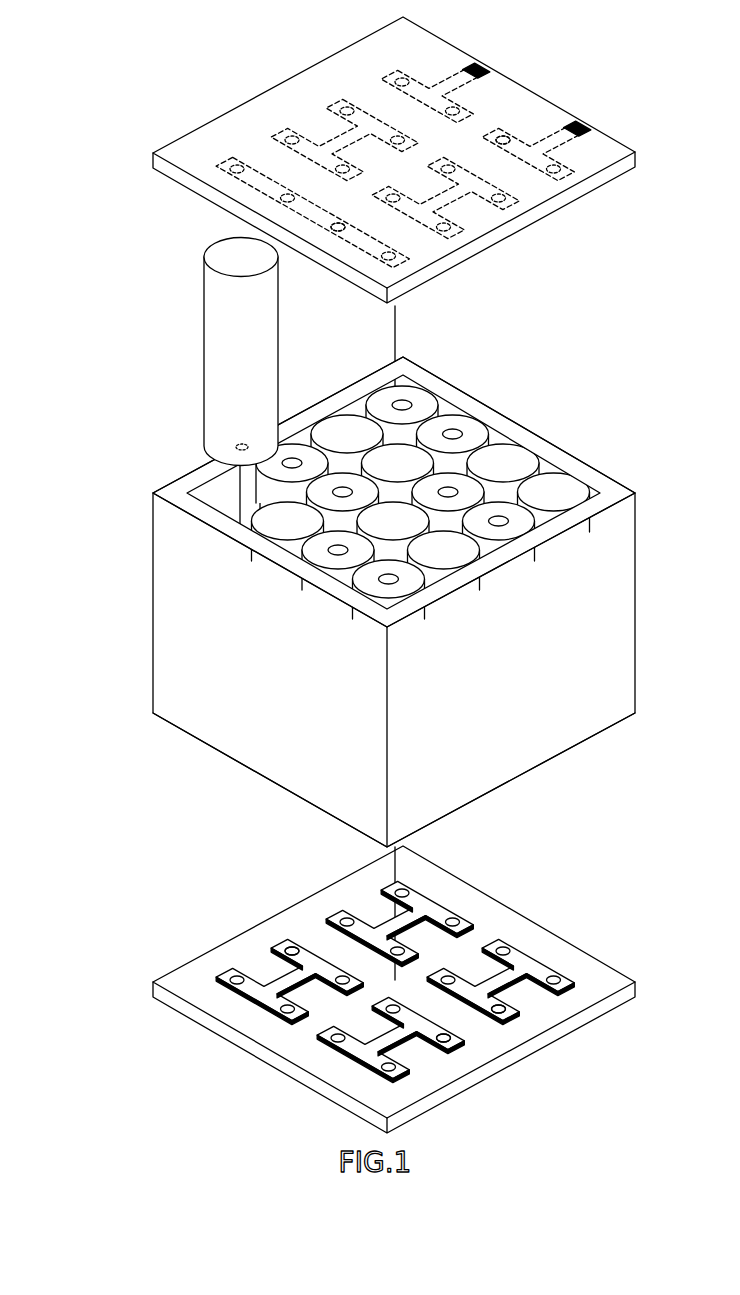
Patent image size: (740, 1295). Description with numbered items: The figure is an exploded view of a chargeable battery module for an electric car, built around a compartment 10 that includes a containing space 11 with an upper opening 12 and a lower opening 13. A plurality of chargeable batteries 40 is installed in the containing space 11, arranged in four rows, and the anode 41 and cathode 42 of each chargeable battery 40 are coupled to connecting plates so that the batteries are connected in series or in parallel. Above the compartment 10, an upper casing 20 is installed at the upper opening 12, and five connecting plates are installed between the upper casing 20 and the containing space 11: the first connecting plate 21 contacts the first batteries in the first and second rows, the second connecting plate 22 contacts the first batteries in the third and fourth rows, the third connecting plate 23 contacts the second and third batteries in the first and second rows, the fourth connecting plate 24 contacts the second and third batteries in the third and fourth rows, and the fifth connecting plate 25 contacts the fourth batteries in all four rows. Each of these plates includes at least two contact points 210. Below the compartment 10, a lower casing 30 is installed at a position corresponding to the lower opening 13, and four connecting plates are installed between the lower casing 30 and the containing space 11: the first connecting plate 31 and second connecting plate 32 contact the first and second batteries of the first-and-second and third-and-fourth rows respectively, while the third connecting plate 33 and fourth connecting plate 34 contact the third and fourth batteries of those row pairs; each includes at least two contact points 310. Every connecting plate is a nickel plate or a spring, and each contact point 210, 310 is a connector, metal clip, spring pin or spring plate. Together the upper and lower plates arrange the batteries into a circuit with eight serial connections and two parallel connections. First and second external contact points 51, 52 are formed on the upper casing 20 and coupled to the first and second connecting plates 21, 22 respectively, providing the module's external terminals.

The compartment 10 is at (182, 643).
The containing space 11 is at (235, 502).
The upper opening 12 is at (542, 468).
The lower opening 13 is at (475, 802).
The upper casing 20 is at (268, 107).
The first connecting plate 21 is at (392, 72).
The second connecting plate 22 is at (556, 188).
The third connecting plate 23 is at (330, 108).
The fourth connecting plate 24 is at (458, 214).
The fifth connecting plate 25 is at (232, 180).
The contact points 210 is at (507, 132).
The first external contact point 51 is at (482, 68).
The second external contact point 52 is at (583, 127).
The lower casing 30 is at (207, 980).
The first connecting plate 31 is at (392, 917).
The second connecting plate 32 is at (528, 967).
The third connecting plate 33 is at (272, 993).
The fourth connecting plate 34 is at (355, 1048).
The contact points 310 is at (296, 945).
The chargeable battery 40 is at (222, 320).
The anode 41 is at (240, 443).
The cathode 42 is at (240, 257).